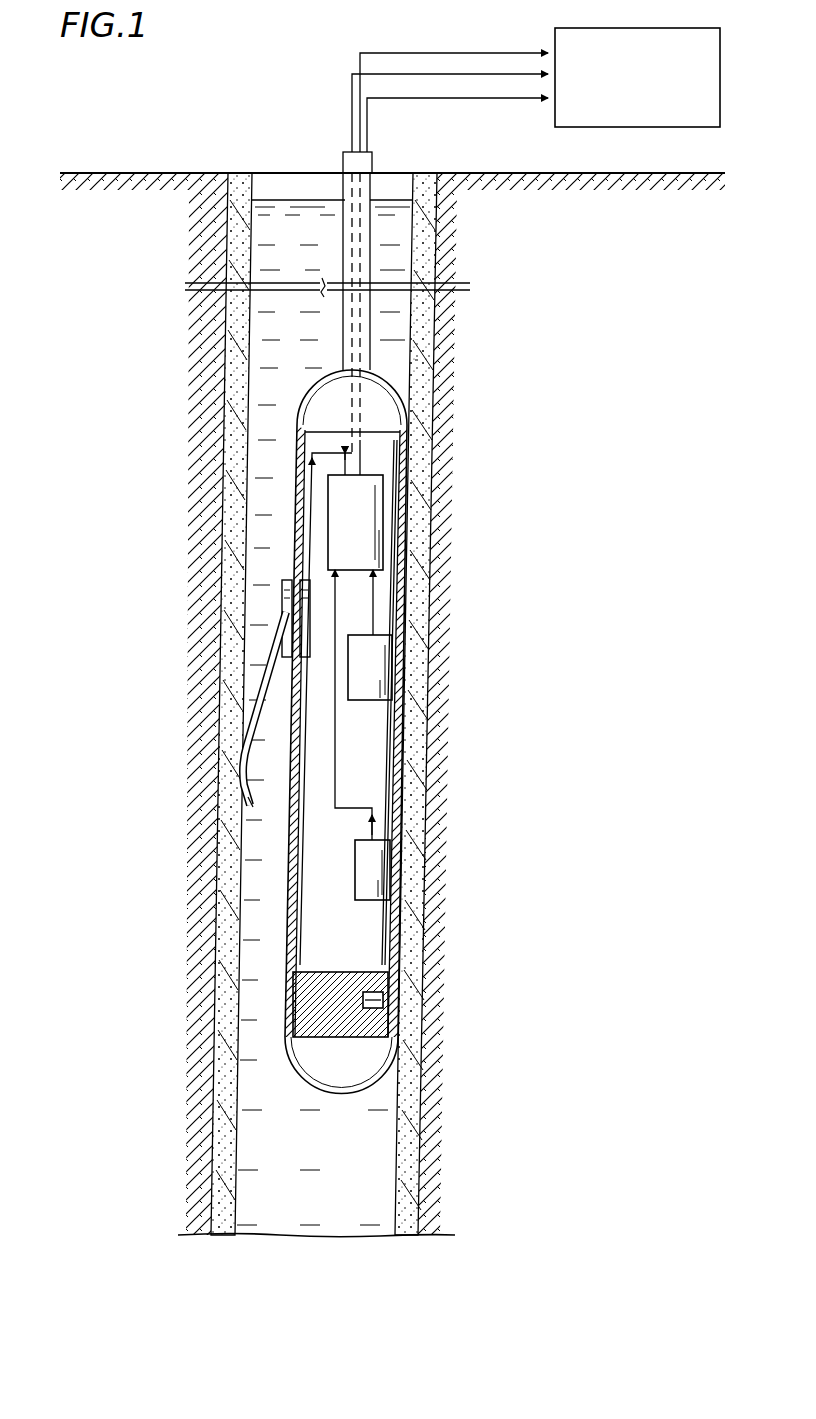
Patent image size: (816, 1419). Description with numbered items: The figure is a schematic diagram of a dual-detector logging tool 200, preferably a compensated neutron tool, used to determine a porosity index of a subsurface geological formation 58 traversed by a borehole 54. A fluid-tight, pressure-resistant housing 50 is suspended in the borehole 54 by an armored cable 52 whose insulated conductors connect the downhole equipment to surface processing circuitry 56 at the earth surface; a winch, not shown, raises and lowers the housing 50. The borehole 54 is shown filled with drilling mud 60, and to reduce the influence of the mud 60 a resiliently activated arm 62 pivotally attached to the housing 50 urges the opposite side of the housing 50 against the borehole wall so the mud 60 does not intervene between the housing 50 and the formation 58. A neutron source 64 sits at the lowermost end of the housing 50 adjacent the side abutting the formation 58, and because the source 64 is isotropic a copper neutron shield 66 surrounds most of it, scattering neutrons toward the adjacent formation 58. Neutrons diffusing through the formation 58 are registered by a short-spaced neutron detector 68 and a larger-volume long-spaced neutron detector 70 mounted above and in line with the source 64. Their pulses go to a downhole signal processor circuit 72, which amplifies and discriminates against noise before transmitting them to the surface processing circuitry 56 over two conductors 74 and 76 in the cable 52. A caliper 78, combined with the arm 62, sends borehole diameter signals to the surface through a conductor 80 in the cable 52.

The logging tool 200 is at (192, 368).
The housing 50 is at (297, 400).
The armored cable 52 is at (343, 152).
The borehole 54 is at (240, 447).
The surface processing circuitry 56 is at (720, 77).
The subsurface geological formation 58 is at (201, 558).
The drilling mud 60 is at (252, 883).
The resiliently activated arm 62 is at (245, 757).
The neutron source 64 is at (383, 1000).
The copper neutron shield 66 is at (310, 970).
The short-spaced neutron detector 68 is at (390, 868).
The long-spaced neutron detector 70 is at (385, 672).
The downhole signal processor circuit 72 is at (372, 530).
The conductor 74 is at (446, 53).
The conductor 76 is at (511, 99).
The caliper 78 is at (305, 605).
The conductor 80 is at (496, 74).